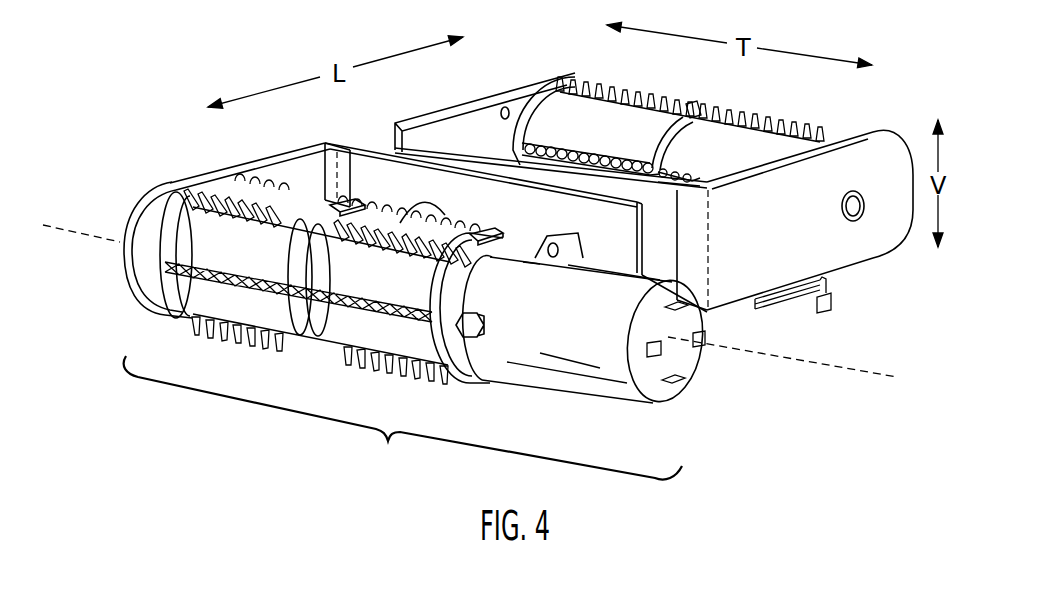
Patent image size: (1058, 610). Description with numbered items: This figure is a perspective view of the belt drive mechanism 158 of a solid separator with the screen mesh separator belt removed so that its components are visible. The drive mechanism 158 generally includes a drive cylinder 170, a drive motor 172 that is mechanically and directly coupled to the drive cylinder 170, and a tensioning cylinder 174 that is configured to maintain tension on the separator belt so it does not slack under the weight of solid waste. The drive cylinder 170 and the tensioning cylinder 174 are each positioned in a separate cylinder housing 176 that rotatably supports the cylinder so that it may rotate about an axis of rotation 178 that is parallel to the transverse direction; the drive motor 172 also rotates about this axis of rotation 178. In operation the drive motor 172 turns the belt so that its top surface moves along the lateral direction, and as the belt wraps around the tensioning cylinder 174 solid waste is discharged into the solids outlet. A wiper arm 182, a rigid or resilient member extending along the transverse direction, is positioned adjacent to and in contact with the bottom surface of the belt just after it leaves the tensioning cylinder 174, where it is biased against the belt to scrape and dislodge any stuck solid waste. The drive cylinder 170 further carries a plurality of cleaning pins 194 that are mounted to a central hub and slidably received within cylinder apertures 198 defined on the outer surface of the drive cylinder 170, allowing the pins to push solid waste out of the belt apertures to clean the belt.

The drive mechanism 158 is at (403, 418).
The drive cylinder 170 is at (403, 287).
The drive motor 172 is at (590, 331).
The tensioning cylinder 174 is at (612, 144).
The cylinder housing 176 is at (803, 236).
The axis of rotation 178 is at (872, 377).
The wiper arm 182 is at (828, 297).
The cleaning pins 194 is at (222, 192).
The cylinder apertures 198 is at (690, 108).